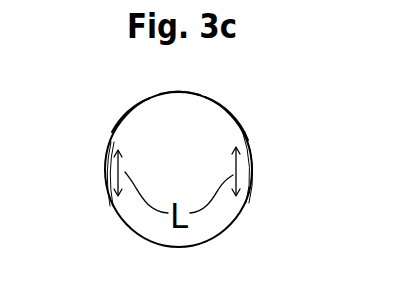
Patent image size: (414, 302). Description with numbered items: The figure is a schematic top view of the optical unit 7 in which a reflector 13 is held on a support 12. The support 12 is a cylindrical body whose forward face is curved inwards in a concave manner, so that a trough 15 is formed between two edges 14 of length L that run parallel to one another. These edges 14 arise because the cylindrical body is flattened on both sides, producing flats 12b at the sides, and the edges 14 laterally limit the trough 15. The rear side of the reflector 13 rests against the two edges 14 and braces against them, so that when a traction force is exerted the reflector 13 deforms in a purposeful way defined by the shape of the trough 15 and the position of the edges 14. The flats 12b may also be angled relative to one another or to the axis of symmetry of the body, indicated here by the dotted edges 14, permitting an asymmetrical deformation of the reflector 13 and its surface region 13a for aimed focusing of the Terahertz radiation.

The container / tubular body 7 is at (104, 223).
The support 12 is at (208, 124).
The flats 12b is at (106, 191).
The reflector 13 is at (125, 115).
The surface portion 13a is at (187, 111).
The edges 14 is at (105, 152).
The trough 15 is at (197, 178).